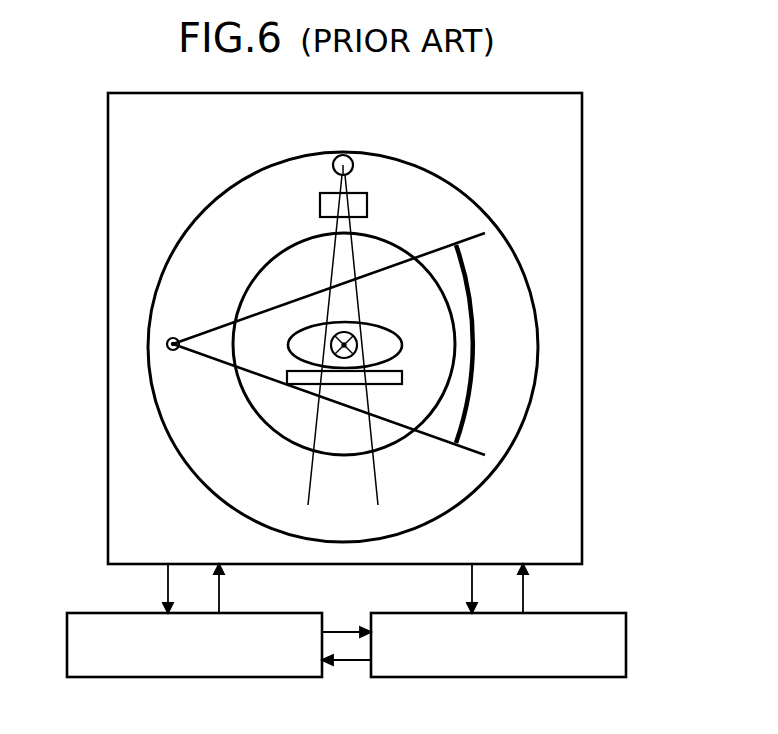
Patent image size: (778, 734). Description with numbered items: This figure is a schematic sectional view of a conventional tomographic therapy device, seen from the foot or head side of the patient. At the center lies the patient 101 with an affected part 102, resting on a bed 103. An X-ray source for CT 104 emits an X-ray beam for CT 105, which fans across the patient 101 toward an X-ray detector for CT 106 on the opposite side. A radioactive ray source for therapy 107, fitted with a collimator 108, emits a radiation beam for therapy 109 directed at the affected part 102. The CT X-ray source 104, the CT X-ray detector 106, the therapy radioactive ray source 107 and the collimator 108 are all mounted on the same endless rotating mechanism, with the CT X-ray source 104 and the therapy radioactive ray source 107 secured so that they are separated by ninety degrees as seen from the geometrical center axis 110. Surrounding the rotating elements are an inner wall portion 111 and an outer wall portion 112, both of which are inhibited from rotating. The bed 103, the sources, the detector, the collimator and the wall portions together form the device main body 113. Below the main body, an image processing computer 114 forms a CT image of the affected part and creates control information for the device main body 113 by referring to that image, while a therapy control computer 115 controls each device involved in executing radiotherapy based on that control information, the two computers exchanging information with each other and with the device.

The patient 101 is at (299, 326).
The affected part 102 is at (346, 332).
The bed 103 is at (296, 384).
The X-ray source for CT 104 is at (168, 344).
The X-ray beam for CT 105 is at (207, 350).
The X-ray detector for CT 106 is at (476, 376).
The radioactive ray source for therapy 107 is at (348, 155).
The collimator 108 is at (367, 207).
The radiation beam for therapy 109 is at (354, 260).
The geometrical center axis 110 is at (358, 346).
The inner wall portion 111 is at (257, 277).
The outer wall portion 112 is at (186, 226).
The device main body 113 is at (648, 161).
The image processing computer 114 is at (66, 648).
The therapy control computer 115 is at (628, 648).